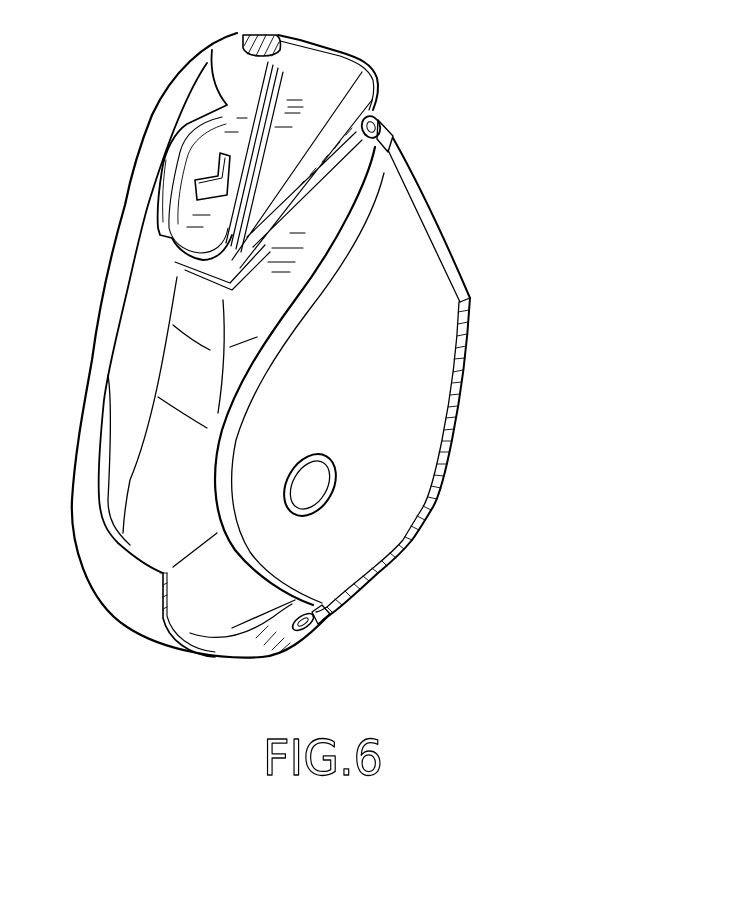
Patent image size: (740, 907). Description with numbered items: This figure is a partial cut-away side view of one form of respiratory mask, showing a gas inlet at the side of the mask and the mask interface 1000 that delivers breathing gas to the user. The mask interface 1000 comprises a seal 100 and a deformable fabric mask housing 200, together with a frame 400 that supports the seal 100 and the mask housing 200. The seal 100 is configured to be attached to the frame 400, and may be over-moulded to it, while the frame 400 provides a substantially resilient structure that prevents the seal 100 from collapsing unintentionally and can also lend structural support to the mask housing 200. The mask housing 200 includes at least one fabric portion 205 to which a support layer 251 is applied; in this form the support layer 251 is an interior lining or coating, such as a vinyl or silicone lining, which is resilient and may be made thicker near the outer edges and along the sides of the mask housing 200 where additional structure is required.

The mask interface 1000 is at (498, 170).
The seal 100 is at (157, 612).
The mask housing 200 is at (452, 262).
The fabric portion 205 is at (467, 338).
The support layer 251 is at (457, 400).
The frame 400 is at (388, 124).